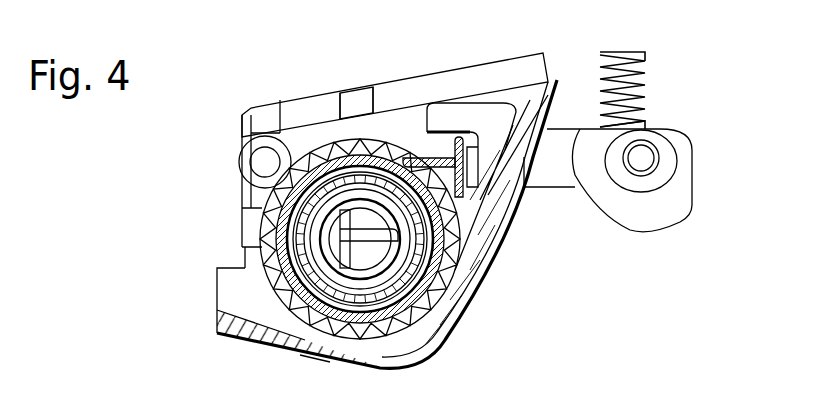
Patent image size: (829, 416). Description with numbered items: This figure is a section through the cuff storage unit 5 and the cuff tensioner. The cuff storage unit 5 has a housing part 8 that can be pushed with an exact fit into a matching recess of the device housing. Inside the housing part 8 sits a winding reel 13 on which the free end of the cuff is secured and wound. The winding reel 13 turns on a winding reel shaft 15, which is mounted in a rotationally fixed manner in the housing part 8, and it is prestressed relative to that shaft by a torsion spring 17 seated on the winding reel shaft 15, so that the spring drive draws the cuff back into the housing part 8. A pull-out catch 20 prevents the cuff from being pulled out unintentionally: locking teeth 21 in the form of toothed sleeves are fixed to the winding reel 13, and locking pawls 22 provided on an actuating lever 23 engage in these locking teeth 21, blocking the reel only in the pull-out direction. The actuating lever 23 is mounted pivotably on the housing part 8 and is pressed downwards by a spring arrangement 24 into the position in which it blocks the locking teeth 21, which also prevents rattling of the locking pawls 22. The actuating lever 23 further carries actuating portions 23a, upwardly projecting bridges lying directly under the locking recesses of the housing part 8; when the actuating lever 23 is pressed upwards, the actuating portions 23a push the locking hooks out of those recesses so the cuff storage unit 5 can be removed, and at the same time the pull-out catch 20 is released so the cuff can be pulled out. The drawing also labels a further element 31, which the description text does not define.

The cuff storage unit 5 is at (270, 352).
The housing part 8 is at (227, 325).
The winding reel 13 is at (293, 214).
The winding reel shaft 15 is at (437, 330).
The torsion spring 17 is at (395, 262).
The pull-out catch 20 is at (312, 135).
The locking teeth 21 is at (282, 115).
The locking pawls 22 is at (358, 128).
The actuating lever 23 is at (678, 193).
The actuating portions 23a is at (447, 112).
The spring arrangement 24 is at (645, 85).
The pin 31 is at (470, 123).